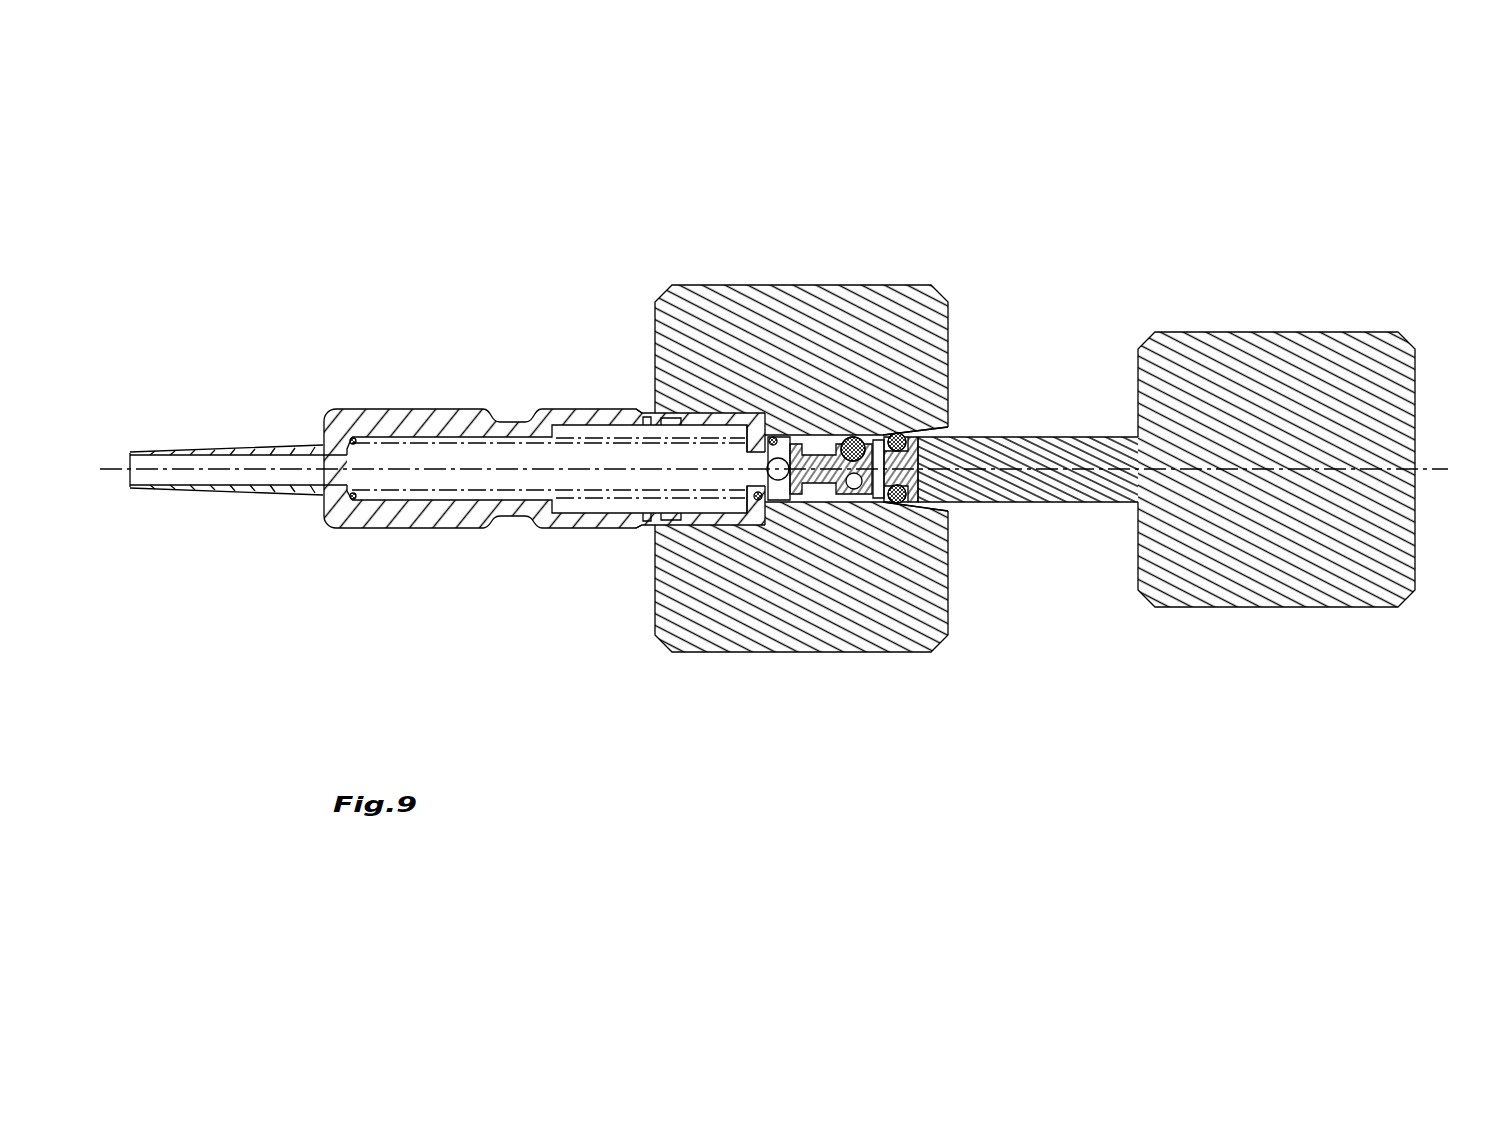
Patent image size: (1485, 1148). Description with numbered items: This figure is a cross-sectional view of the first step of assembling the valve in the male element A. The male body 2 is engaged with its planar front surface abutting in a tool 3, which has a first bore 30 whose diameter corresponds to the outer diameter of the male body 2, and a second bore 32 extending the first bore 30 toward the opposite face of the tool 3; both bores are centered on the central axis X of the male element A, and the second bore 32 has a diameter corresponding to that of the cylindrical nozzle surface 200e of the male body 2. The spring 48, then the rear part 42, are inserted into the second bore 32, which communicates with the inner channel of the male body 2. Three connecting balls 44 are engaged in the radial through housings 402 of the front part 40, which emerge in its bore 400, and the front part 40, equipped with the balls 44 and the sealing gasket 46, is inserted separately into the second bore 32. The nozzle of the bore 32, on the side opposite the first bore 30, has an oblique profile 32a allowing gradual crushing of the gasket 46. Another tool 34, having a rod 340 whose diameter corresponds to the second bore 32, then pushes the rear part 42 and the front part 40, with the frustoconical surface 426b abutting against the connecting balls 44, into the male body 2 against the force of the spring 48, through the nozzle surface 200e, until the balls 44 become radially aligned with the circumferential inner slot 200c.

The male body 2 is at (388, 423).
The tool 3 is at (832, 303).
The first bore 30 is at (757, 530).
The second bore 32 is at (817, 511).
The oblique profile 32a is at (941, 441).
The tool 34 is at (1240, 367).
The front part 40 is at (874, 505).
The rear part 42 is at (803, 520).
The connecting balls 44 is at (856, 437).
The sealing gasket 46 is at (902, 508).
The spring 48 is at (393, 497).
The circumferential inner slot 200c is at (666, 508).
The cylindrical nozzle surface 200e is at (745, 530).
The rod 340 is at (1052, 482).
The bore 400 is at (855, 483).
The radial through housings 402 is at (838, 436).
The frustoconical surface 426b is at (740, 520).
The male element A is at (481, 355).
The central axis X is at (785, 458).